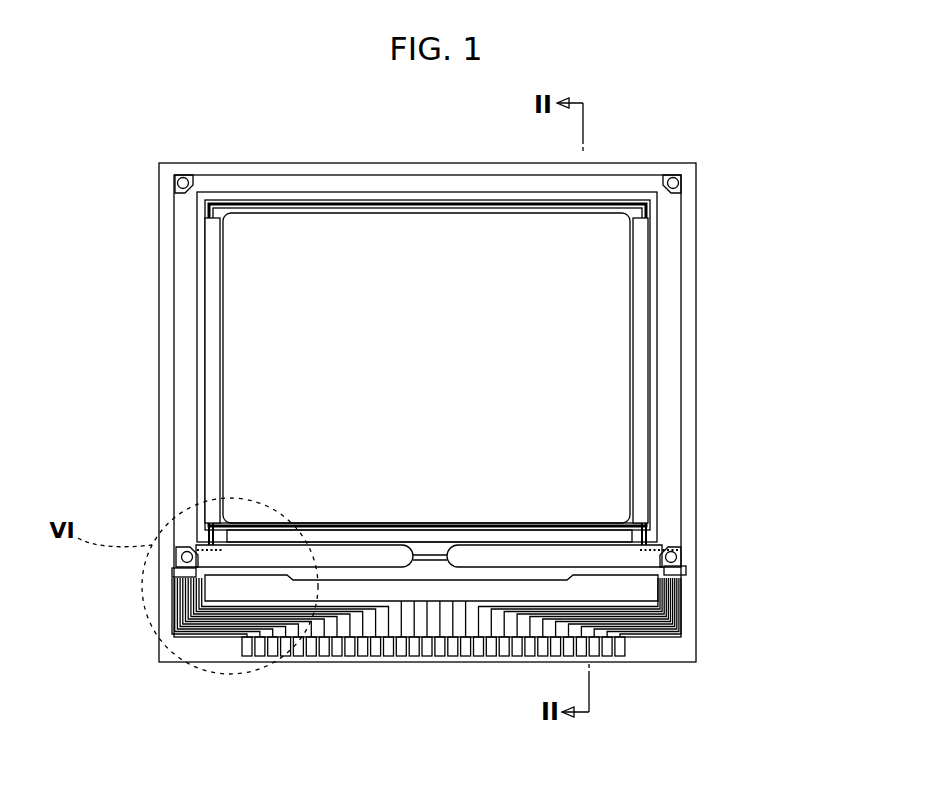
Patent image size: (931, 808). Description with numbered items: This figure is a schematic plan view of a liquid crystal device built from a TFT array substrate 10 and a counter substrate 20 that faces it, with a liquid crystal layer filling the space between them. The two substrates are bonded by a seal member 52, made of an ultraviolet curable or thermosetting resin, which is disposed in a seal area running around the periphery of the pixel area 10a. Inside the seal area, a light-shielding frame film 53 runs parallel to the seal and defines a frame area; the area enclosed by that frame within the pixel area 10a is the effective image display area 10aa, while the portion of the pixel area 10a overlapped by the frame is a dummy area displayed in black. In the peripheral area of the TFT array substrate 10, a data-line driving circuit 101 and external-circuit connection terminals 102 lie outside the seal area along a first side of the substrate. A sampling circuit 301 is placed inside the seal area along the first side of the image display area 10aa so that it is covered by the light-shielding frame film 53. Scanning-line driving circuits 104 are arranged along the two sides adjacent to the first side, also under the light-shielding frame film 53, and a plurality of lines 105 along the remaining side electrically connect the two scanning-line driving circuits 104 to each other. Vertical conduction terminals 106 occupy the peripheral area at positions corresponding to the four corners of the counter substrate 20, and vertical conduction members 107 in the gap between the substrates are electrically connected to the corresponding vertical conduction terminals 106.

The TFT array substrate 10 is at (270, 170).
The pixel area 10a is at (247, 272).
The image display area 10aa is at (295, 372).
The counter substrate 20 is at (445, 175).
The seal member 52 is at (668, 305).
The light-shielding frame film 53 is at (655, 538).
The data-line driving circuit 101 is at (226, 600).
The external-circuit connection terminals 102 is at (402, 640).
The scanning-line driving circuits 104 is at (645, 366).
The lines 105 is at (342, 198).
The vertical conduction terminals 106 is at (210, 172).
The vertical conduction members 107 is at (688, 568).
The sampling circuit 301 is at (322, 530).